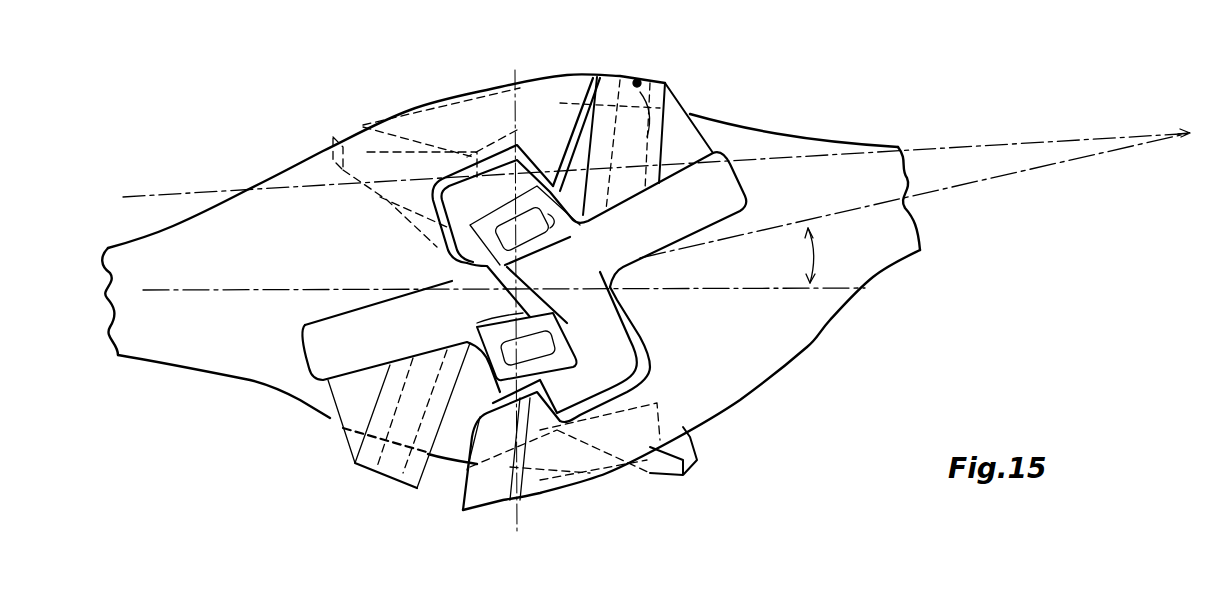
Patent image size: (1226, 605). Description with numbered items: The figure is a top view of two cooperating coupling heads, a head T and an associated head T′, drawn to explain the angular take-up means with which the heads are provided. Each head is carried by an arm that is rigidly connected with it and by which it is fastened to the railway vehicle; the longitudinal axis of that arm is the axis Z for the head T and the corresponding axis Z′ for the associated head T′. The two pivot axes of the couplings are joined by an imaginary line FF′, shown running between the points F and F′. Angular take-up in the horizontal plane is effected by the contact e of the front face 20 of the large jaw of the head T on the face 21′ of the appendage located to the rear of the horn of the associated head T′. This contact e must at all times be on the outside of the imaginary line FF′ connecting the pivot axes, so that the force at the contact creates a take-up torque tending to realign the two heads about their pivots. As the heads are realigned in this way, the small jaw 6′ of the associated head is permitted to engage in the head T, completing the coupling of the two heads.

The head T is at (383, 269).
The associated head T' is at (691, 279).
The pivot axis point F is at (644, 165).
The pivot axis point F' is at (1197, 117).
The longitudinal axis Z is at (504, 272).
The longitudinal axis of associated head Z' is at (912, 196).
The front face of the large jaw 20 is at (620, 135).
The face of the appendage 21' is at (651, 127).
The contact e is at (640, 80).
The small jaw 6' is at (525, 225).